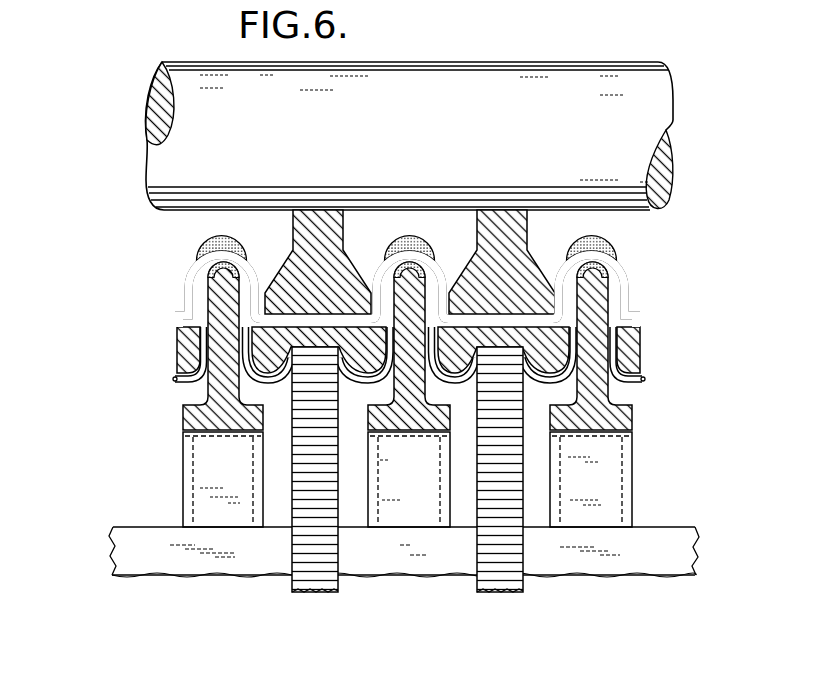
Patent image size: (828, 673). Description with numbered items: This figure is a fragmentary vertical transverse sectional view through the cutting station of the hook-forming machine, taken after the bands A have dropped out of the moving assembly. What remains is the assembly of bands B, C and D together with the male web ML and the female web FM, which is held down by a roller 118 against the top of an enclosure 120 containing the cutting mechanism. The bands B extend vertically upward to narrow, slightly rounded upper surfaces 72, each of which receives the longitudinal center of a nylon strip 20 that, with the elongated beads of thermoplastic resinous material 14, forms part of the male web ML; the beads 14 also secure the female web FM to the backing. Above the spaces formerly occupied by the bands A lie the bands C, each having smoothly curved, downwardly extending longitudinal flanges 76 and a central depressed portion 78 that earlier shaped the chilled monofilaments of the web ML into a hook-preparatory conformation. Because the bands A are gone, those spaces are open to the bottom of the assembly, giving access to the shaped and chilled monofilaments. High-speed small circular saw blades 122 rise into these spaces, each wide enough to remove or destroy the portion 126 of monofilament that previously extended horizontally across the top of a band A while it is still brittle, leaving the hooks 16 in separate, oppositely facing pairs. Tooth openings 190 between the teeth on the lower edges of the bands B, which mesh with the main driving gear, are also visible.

The roller 118 is at (527, 71).
The beads of thermoplastic resinous material 14 is at (209, 243).
The upper surfaces of bands B 72 is at (218, 273).
The nylon strips 20 is at (602, 280).
The central depressed portion 78 is at (319, 345).
The longitudinal flanges 76 is at (443, 361).
The portion of the nylon monofilaments 126 is at (429, 437).
The male hooks 16 is at (277, 383).
The tooth openings 190 is at (200, 433).
The enclosure 120 is at (122, 552).
The circular saw blades 122 is at (429, 461).
The bands D is at (293, 229).
The bands C is at (407, 350).
The bands B is at (407, 344).
The male web ML is at (384, 378).
The female web FM is at (636, 293).